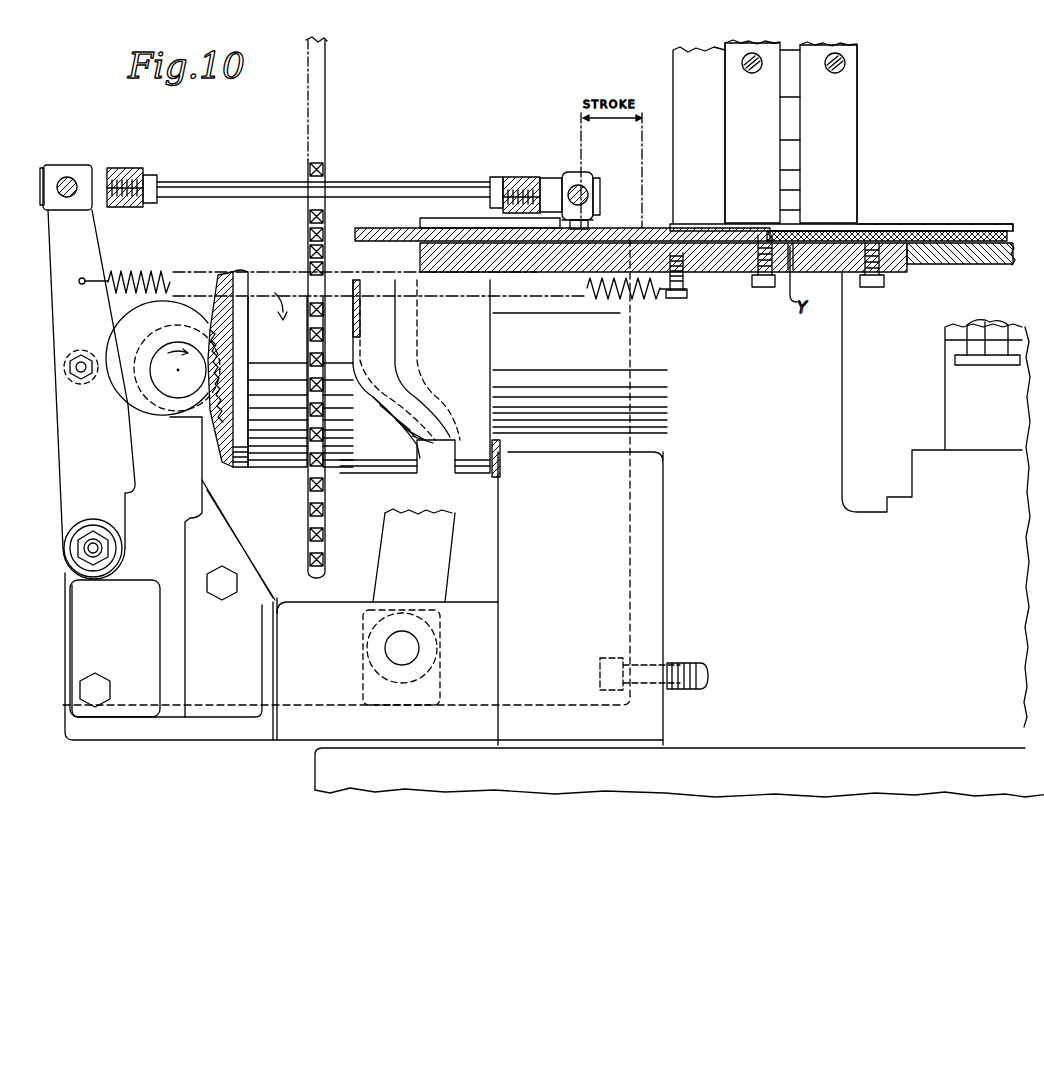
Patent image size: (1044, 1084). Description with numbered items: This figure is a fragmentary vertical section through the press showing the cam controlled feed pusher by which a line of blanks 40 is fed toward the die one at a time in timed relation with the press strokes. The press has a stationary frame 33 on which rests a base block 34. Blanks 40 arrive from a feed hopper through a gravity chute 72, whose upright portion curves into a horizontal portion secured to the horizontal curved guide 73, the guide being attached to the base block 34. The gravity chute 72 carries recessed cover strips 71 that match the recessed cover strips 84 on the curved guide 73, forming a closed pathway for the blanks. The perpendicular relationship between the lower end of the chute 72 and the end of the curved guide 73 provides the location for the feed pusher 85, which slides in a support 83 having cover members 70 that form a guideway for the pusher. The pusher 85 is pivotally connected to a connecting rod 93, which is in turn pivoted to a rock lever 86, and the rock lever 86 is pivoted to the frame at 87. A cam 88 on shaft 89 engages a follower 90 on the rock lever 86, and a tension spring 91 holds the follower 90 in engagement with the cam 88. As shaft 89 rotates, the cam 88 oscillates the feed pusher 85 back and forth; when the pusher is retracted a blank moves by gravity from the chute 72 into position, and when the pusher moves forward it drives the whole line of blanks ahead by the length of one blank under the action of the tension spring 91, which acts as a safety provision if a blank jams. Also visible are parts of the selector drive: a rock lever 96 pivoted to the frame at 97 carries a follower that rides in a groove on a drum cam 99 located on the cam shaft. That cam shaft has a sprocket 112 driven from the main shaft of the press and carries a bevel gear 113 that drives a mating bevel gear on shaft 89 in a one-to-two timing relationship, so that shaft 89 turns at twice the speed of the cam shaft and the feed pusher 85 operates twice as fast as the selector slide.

The stationary frame 33 is at (690, 57).
The base block 34 is at (945, 377).
The blanks 40 is at (795, 181).
The cover members 70 is at (466, 226).
The recessed cover strips 71 is at (745, 128).
The gravity chute 72 is at (866, 99).
The horizontal curved guide 73 is at (984, 222).
The support 83 is at (680, 225).
The recessed cover strips 84 is at (948, 229).
The feed pusher 85 is at (396, 228).
The rock lever 86 is at (62, 315).
The pivot 87 is at (90, 547).
The cam 88 is at (125, 332).
The shaft 89 is at (177, 385).
The follower 90 is at (70, 383).
The tension spring 91 is at (168, 272).
The connecting rod 93 is at (405, 184).
The rock lever 96 is at (388, 572).
The pivot 97 is at (392, 648).
The drum cam 99 is at (373, 462).
The sprocket 112 is at (305, 522).
The bevel gear 113 is at (222, 463).